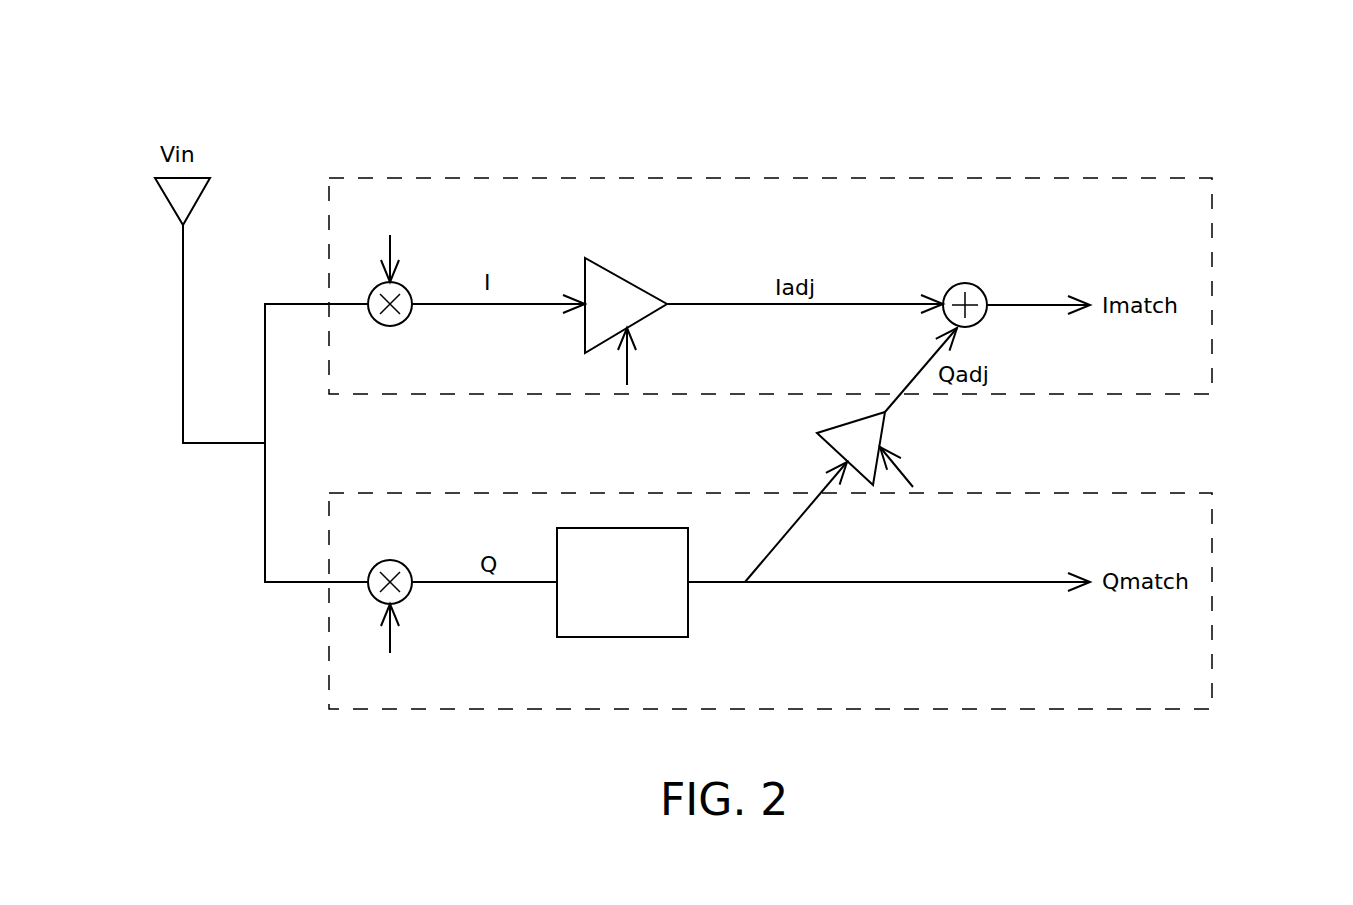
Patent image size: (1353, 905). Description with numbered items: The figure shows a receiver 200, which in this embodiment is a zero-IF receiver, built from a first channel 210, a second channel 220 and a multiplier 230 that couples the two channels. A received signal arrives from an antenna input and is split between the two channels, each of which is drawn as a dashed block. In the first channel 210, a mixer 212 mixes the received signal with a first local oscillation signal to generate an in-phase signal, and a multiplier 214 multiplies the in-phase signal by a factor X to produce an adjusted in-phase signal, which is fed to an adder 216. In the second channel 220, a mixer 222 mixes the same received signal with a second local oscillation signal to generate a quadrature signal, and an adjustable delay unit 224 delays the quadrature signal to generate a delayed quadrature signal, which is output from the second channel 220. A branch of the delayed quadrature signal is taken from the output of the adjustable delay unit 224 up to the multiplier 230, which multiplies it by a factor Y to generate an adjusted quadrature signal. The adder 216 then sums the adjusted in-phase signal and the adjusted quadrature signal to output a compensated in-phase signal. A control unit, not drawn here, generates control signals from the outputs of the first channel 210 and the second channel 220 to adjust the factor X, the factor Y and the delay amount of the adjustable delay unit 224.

The receiver 200 is at (1127, 102).
The first channel 210 is at (1212, 222).
The mixer 212 is at (402, 324).
The multiplier 214 is at (662, 258).
The adder 216 is at (981, 289).
The second channel 220 is at (1212, 537).
The mixer 222 is at (404, 565).
The adjustable delay unit 224 is at (625, 637).
The multiplier 230 is at (836, 425).